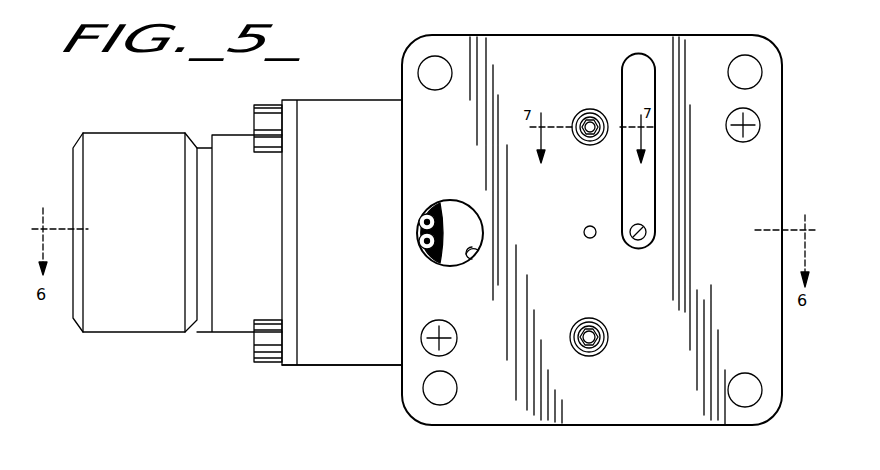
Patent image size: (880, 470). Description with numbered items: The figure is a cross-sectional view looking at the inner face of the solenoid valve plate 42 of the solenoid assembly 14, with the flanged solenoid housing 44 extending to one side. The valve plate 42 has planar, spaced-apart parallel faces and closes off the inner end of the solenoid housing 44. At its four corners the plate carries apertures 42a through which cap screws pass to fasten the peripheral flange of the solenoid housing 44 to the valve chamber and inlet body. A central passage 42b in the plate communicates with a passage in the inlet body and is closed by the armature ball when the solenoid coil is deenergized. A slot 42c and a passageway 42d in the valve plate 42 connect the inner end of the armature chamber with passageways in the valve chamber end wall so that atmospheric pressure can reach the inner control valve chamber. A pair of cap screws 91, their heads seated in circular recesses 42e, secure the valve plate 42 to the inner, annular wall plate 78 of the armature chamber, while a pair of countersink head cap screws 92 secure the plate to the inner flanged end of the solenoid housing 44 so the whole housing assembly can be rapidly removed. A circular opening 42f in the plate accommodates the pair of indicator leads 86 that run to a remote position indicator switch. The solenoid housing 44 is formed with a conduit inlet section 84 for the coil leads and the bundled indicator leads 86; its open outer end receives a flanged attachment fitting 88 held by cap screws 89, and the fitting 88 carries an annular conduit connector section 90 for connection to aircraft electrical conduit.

The solenoid assembly 14 is at (624, 461).
The solenoid valve plate 42 is at (735, 269).
The apertures 42a is at (430, 57).
The central passage 42b is at (592, 226).
The slot 42c is at (645, 180).
The passageway 42d is at (644, 232).
The circular recesses 42e is at (588, 142).
The circular opening 42f is at (478, 251).
The solenoid housing 44 is at (345, 366).
The inner wall plate 78 is at (462, 230).
The conduit inlet section 84 is at (360, 279).
The indicator leads 86 is at (448, 201).
The attachment fitting 88 is at (206, 245).
The cap screws 89 is at (258, 125).
The conduit connector section 90 is at (73, 165).
The cap screws 91 is at (590, 120).
The countersink head cap screws 92 is at (758, 118).